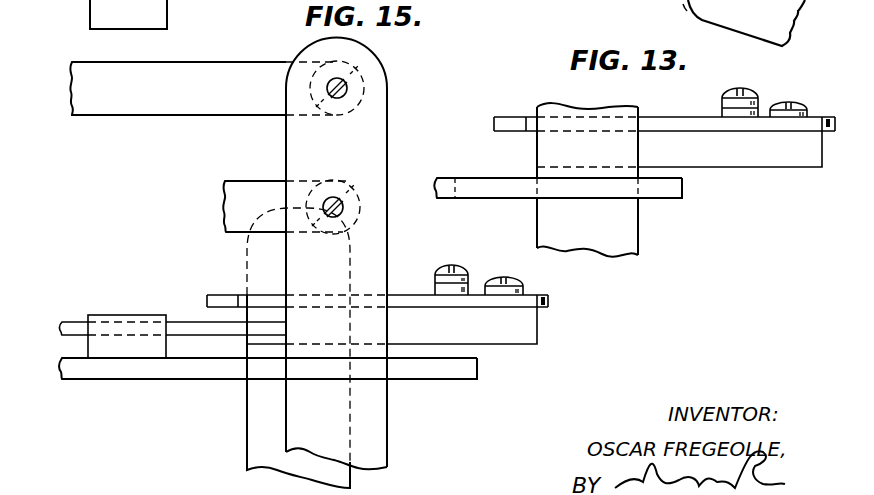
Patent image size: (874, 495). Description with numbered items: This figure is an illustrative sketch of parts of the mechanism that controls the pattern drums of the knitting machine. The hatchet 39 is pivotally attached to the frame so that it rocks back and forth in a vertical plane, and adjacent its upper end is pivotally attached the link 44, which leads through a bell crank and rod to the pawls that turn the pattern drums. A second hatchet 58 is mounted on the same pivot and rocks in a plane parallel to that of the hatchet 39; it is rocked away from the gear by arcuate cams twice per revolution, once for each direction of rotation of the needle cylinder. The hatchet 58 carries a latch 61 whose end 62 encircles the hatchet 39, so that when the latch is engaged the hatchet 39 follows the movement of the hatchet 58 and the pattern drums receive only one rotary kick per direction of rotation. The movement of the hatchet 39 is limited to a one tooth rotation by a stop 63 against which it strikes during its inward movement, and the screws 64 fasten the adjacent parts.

In FIG. 15, the hatchet 39 is at (387, 88).
In FIG. 15, the link 44 is at (262, 181).
In FIG. 15, the second hatchet 58 is at (248, 262).
In FIG. 15, the latch 61 is at (418, 281).
In FIG. 13, the latch 61 is at (687, 125).
In FIG. 15, the end of latch 62 is at (232, 292).
In FIG. 13, the end of latch 62 is at (520, 108).
In FIG. 15, the stop 63 is at (198, 327).
In FIG. 15, the screws 64 is at (470, 290).
In FIG. 13, the screws 64 is at (760, 113).